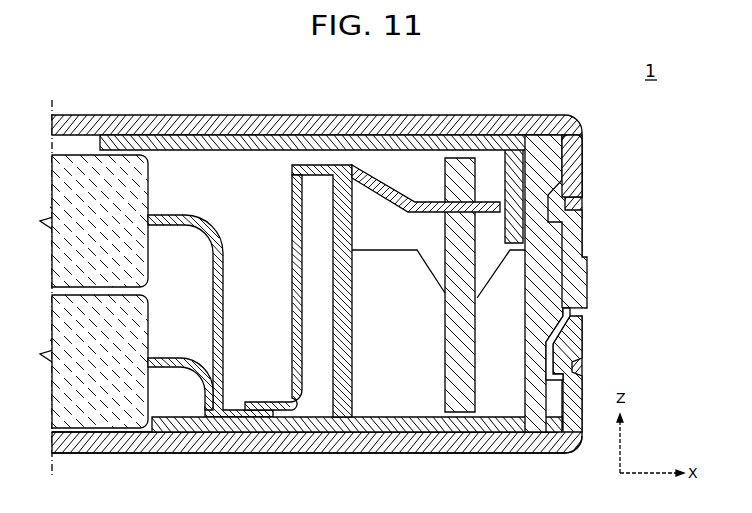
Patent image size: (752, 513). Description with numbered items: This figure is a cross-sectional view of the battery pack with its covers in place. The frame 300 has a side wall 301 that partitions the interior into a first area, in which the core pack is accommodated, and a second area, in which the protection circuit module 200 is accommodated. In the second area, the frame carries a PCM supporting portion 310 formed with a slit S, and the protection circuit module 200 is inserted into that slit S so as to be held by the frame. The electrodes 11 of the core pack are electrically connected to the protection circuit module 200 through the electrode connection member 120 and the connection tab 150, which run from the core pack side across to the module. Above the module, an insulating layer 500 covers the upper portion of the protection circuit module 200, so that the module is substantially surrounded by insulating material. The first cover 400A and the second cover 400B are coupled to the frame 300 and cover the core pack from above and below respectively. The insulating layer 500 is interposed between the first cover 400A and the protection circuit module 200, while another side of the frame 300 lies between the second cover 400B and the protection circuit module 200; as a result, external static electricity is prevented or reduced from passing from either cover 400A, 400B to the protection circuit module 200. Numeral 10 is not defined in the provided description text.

The display panel / battery block 10 is at (60, 183).
The electrodes 11 is at (207, 223).
The electrode connection member 120 is at (305, 400).
The connection tab 150 is at (387, 183).
The protection circuit module 200 is at (456, 158).
The frame 300 is at (592, 279).
The side wall 301 is at (344, 178).
The PCM supporting portion 310 is at (498, 376).
The first cover 400A is at (522, 136).
The second cover 400B is at (492, 448).
The insulating layer 500 is at (282, 134).
The slit S is at (477, 349).